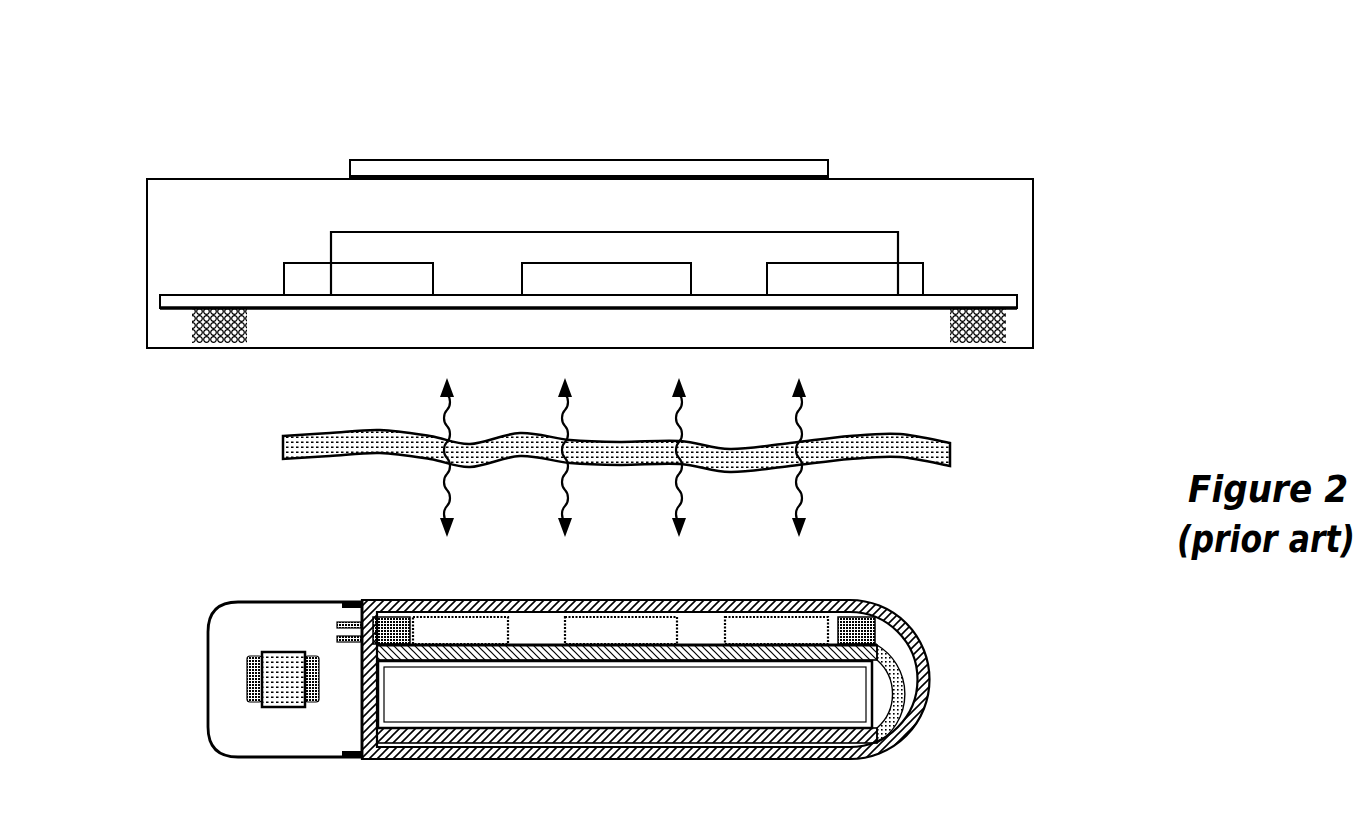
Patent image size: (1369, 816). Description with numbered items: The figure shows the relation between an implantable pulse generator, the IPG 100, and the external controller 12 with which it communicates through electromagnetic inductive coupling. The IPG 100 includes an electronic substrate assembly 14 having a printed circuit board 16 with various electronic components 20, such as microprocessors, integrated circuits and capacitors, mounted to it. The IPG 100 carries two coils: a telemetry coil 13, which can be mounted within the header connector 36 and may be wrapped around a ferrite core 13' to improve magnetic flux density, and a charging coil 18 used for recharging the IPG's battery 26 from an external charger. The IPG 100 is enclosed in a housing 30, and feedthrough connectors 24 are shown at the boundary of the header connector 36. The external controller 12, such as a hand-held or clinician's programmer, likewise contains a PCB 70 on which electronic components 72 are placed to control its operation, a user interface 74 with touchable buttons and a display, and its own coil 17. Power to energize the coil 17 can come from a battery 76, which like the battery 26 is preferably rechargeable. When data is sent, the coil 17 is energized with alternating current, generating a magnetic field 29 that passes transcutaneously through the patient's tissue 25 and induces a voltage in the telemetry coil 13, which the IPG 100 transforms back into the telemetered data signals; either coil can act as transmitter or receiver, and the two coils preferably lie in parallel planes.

The external controller 12 is at (287, 97).
The PCB 70 is at (457, 293).
The battery 76 is at (537, 232).
The user interface 74 is at (736, 160).
The electronic components 72 is at (363, 275).
The coil 17 is at (192, 334).
The magnetic field 29 is at (683, 416).
The patient's tissue 25 is at (922, 440).
The IPG 100 is at (316, 529).
The housing 30 is at (420, 759).
The electronic substrate assembly 14 is at (540, 645).
The printed circuit board 16 is at (692, 642).
The battery 26 is at (625, 694).
The charging coil 18 is at (387, 617).
The electronic components 20 is at (465, 627).
The header connector 36 is at (248, 597).
The feedthrough connectors 24 is at (344, 622).
The ferrite core 13' is at (292, 662).
The telemetry coil 13 is at (283, 700).